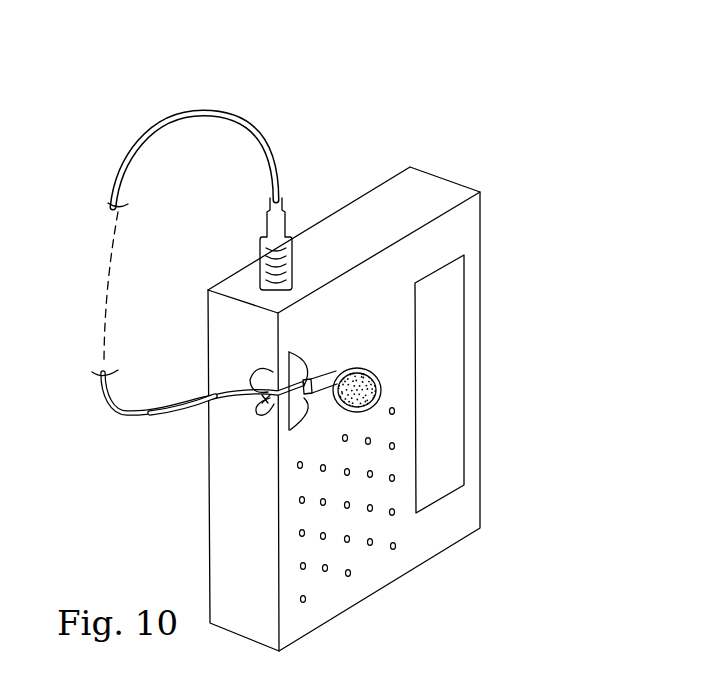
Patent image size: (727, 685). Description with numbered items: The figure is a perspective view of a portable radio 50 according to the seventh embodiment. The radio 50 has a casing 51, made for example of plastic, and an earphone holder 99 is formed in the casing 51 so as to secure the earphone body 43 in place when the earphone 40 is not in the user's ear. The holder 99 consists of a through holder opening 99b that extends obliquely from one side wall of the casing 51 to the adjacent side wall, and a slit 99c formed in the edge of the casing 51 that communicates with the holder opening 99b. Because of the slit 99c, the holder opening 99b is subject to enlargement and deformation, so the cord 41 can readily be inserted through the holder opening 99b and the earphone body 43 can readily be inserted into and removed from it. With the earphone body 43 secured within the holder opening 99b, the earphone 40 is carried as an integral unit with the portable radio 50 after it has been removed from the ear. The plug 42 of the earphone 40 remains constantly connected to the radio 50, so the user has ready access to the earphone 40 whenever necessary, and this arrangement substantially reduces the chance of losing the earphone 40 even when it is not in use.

The portable radio 50 is at (488, 132).
The casing 51 is at (458, 230).
The plug 42 is at (290, 227).
The earphone 40 is at (127, 411).
The cord 41 is at (147, 420).
The earphone body 43 is at (359, 367).
The earphone holder 99 is at (289, 389).
The holder opening 99b is at (302, 367).
The slit 99c is at (255, 407).